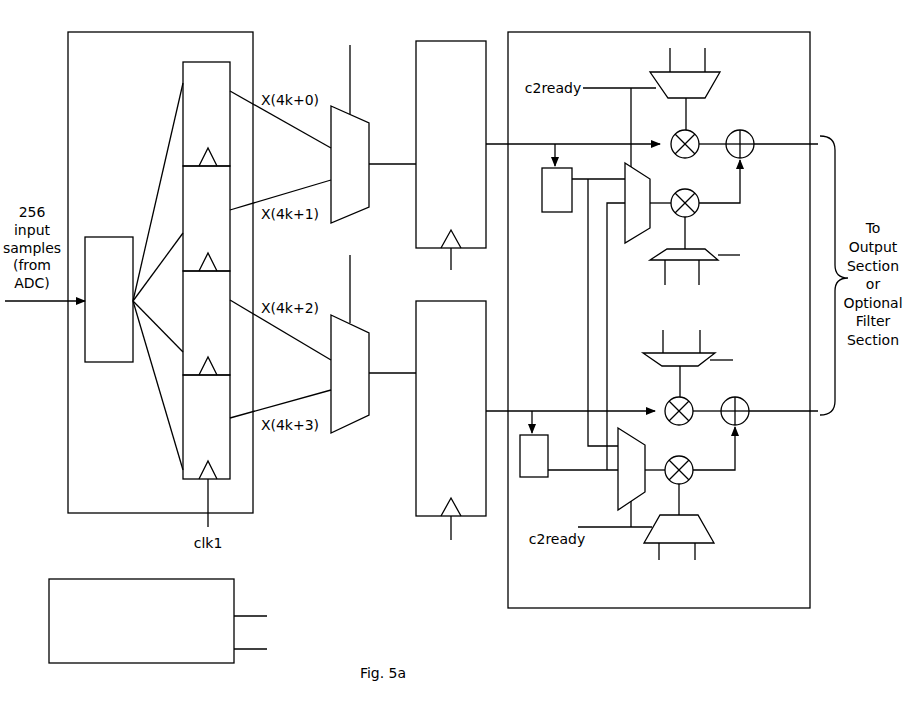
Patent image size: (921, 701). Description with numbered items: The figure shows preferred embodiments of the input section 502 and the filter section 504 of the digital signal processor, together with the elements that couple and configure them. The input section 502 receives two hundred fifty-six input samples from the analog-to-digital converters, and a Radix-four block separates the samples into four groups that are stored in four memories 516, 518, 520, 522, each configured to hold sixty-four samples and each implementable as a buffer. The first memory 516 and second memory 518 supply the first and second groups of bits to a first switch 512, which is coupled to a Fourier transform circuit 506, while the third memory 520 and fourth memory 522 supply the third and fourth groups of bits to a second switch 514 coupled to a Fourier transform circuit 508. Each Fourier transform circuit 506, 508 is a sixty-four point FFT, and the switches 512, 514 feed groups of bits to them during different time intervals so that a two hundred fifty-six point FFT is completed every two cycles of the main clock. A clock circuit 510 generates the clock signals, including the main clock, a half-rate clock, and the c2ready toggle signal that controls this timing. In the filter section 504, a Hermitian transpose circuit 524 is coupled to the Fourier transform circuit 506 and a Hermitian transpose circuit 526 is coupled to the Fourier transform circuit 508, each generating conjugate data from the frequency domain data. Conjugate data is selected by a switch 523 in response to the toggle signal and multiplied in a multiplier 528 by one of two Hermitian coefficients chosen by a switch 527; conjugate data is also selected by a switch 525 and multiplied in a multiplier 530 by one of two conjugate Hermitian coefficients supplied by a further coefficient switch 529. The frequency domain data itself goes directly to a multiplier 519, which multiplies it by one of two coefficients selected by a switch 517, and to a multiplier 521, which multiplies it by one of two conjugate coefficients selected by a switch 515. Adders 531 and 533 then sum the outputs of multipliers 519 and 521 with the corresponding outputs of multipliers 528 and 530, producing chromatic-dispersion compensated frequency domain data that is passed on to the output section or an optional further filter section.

The input section 502 is at (68, 468).
The filter section 504 is at (508, 562).
The Fourier transform circuit 506 is at (414, 231).
The Fourier transform circuit 508 is at (417, 497).
The clock circuit 510 is at (208, 579).
The first switch 512 is at (332, 122).
The second switch 514 is at (348, 428).
The switch 515 is at (705, 353).
The first memory 516 is at (257, 114).
The switch 517 is at (713, 83).
The second memory 518 is at (257, 218).
The multiplier 519 is at (692, 130).
The third memory 520 is at (257, 323).
The multiplier 521 is at (691, 400).
The fourth memory 522 is at (257, 427).
The switch 523 is at (635, 242).
The Hermitian transpose circuit 524 is at (548, 212).
The switch 525 is at (618, 473).
The Hermitian transpose circuit 526 is at (538, 477).
The switch 527 is at (712, 262).
The multiplier 528 is at (700, 212).
The coefficient multiplexer 529 is at (705, 528).
The multiplier 530 is at (690, 481).
The adder 531 is at (748, 157).
The adder 533 is at (745, 423).